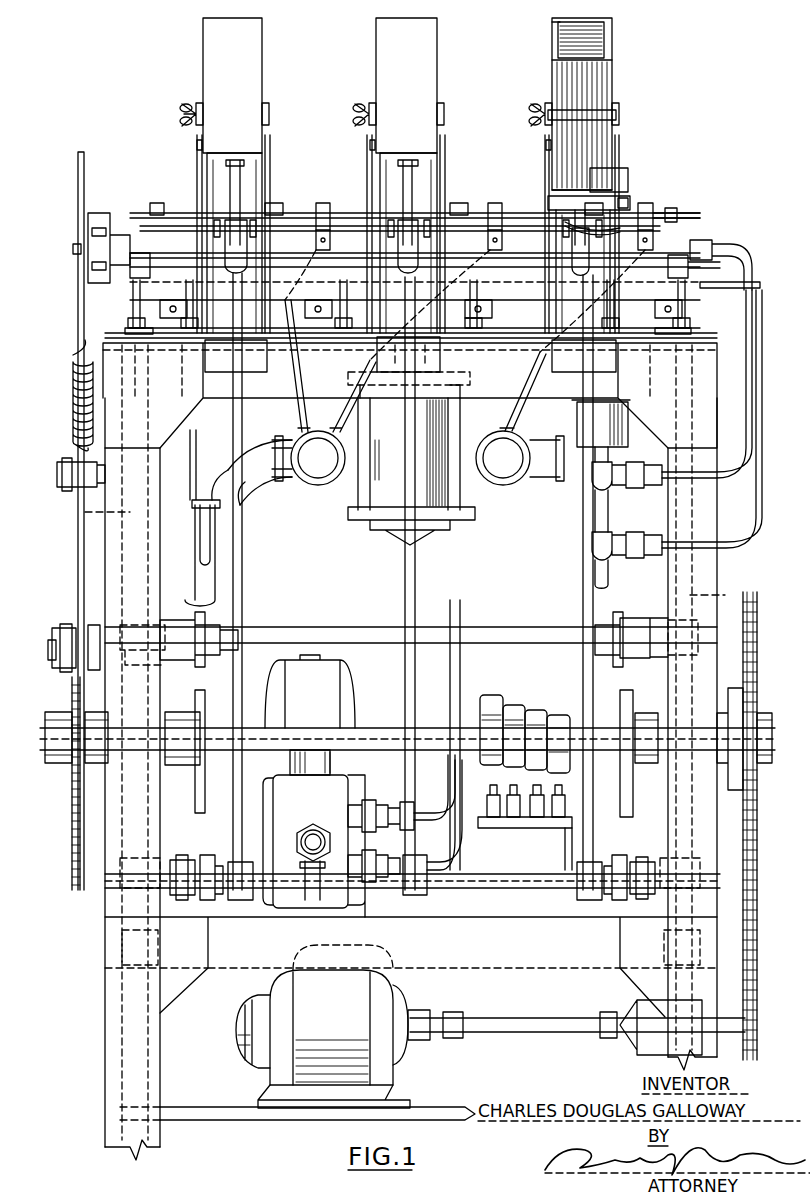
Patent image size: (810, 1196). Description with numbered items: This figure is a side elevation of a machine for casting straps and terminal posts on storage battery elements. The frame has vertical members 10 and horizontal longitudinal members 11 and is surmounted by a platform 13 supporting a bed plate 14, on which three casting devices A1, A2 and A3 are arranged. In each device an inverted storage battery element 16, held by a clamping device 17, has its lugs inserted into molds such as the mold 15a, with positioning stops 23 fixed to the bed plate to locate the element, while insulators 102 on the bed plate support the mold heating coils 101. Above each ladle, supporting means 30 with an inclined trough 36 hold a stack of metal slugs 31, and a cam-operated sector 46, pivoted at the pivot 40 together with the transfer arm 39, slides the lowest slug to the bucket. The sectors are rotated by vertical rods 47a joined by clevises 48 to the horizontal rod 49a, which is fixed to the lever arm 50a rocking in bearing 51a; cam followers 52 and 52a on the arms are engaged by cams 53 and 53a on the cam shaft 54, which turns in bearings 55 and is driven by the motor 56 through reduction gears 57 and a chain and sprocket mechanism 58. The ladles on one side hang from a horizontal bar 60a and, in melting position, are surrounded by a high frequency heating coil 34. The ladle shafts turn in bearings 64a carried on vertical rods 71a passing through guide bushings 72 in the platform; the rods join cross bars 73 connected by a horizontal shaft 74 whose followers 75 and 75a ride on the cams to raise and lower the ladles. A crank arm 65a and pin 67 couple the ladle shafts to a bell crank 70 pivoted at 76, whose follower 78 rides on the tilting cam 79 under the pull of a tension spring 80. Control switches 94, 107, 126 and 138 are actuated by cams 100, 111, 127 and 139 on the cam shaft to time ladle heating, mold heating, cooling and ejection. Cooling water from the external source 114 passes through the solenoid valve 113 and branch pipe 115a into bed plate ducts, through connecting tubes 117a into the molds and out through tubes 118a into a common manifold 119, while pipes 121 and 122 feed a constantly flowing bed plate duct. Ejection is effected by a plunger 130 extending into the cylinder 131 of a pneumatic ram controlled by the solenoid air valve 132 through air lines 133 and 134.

The vertical members 10 is at (114, 1055).
The horizontal longitudinal members 11 is at (283, 397).
The platform 13 is at (340, 343).
The bed plate 14 is at (312, 250).
The open cavity mold 15a is at (610, 206).
The storage battery element 16 is at (600, 82).
The clamping device 17 is at (194, 100).
The positioning stops 23 is at (624, 170).
The slug stack supporting means 30 is at (194, 48).
The metal slugs 31 is at (552, 28).
The high frequency heating coil 34 is at (478, 262).
The trough 36 is at (612, 23).
The arm 39 is at (197, 178).
The pivot 40 is at (252, 234).
The cam-operated sector 46 is at (408, 243).
The vertical rod 47a is at (245, 560).
The clevises 48 is at (417, 221).
The horizontal rod 49a is at (500, 882).
The lever arm 50a is at (186, 860).
The bearing 51a is at (120, 890).
The roller or cam follower 52 is at (210, 855).
The roller or cam follower 52a is at (618, 855).
The cam 53 is at (196, 806).
The cam 53a is at (628, 798).
The cam shaft 54 is at (384, 728).
The bearings 55 is at (160, 712).
The motor 56 is at (262, 1078).
The reduction gears 57 is at (636, 1012).
The chain and sprocket mechanism 58 is at (762, 902).
The horizontal bar 60a is at (528, 272).
The bearings 64a is at (140, 253).
The crank arm 65a is at (104, 213).
The pin 67 is at (73, 250).
The bell crank 70 is at (78, 300).
The vertical rod 71a is at (133, 312).
The guide bushings 72 is at (128, 330).
The cross bar 73 is at (135, 624).
The horizontal shaft 74 is at (278, 630).
The roller or cam follower 75 is at (198, 620).
The roller or cam follower 75a is at (622, 622).
The pivot 76 is at (57, 478).
The roller or follower 78 is at (66, 628).
The tilting cam 79 is at (72, 840).
The tension spring 80 is at (73, 396).
The cam operated control switch 94 is at (492, 817).
The cam 100 is at (490, 696).
The mold heating coils 101 is at (700, 213).
The insulators 102 is at (323, 203).
The cam operated control switch 107 is at (513, 792).
The cam 111 is at (514, 705).
The solenoid controlled valve 113 is at (612, 430).
The external source 114 is at (609, 578).
The branch pipe 115a is at (750, 262).
The connecting tubes 117a is at (640, 230).
The tubes 118a is at (308, 430).
The common manifold 119 is at (482, 480).
The pipe 121 is at (762, 505).
The pipe 122 is at (196, 440).
The cam operated control switch 126 is at (538, 792).
The cam 127 is at (536, 710).
The plunger 130 is at (444, 345).
The cylinder 131 is at (403, 471).
The solenoid operated air valve 132 is at (320, 803).
The air line 133 is at (430, 812).
The air line 134 is at (440, 858).
The cam operated control switch 138 is at (560, 812).
The cam 139 is at (560, 715).
The casting device A1 is at (175, 152).
The casting device A2 is at (350, 154).
The casting device A3 is at (521, 154).